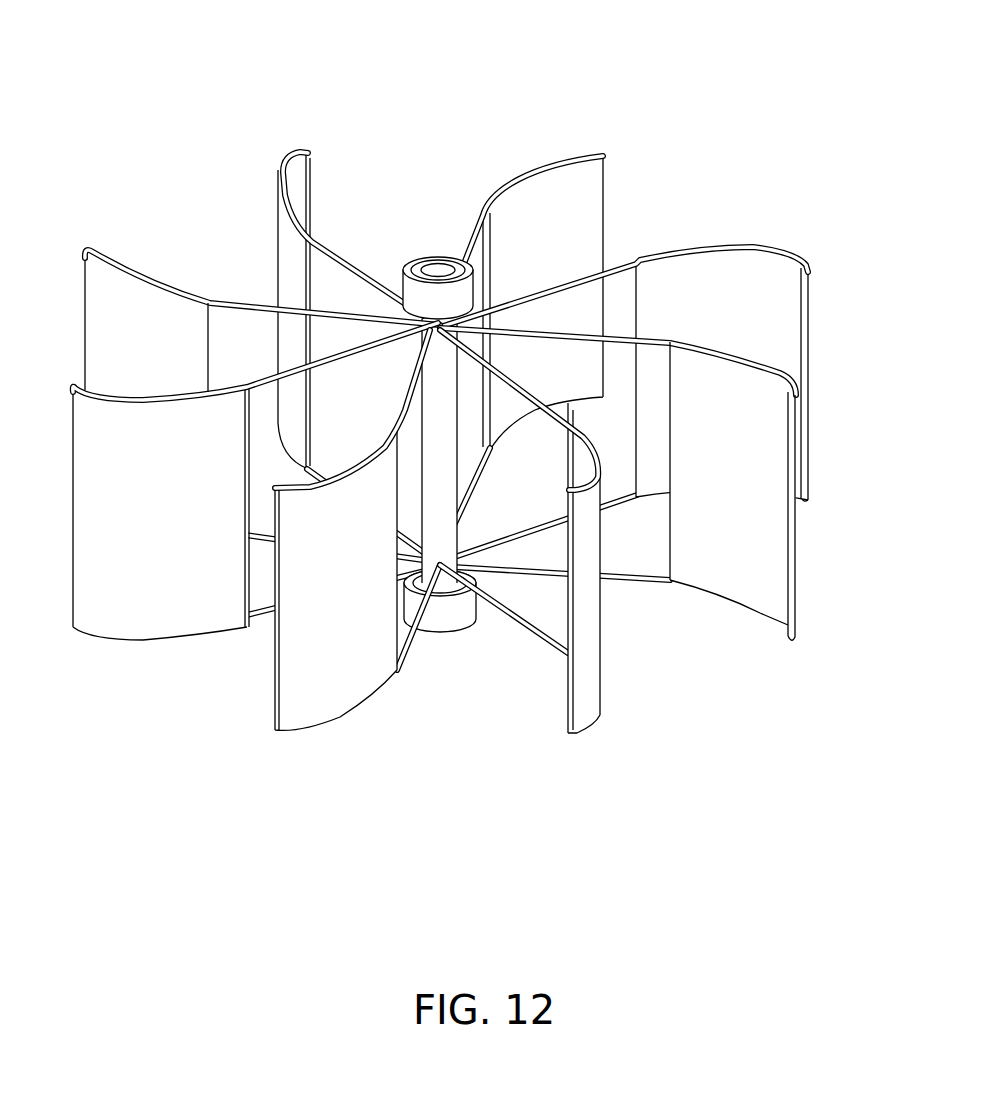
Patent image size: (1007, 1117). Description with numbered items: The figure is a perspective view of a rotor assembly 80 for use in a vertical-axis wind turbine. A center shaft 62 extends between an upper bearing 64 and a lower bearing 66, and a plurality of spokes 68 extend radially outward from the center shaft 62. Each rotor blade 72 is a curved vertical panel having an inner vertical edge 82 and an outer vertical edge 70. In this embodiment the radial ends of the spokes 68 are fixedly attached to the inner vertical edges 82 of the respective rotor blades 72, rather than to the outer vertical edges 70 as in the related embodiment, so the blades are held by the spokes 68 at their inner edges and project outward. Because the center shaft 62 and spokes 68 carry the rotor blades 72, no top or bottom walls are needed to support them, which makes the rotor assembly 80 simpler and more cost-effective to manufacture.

The rotor assembly 80 is at (412, 152).
The center shaft 62 is at (443, 523).
The upper bearing 64 is at (403, 266).
The lower bearing 66 is at (447, 622).
The spokes 68 is at (250, 306).
The outer vertical edges 70 is at (795, 598).
The rotor blades 72 is at (153, 348).
The inner vertical edges 82 is at (208, 333).